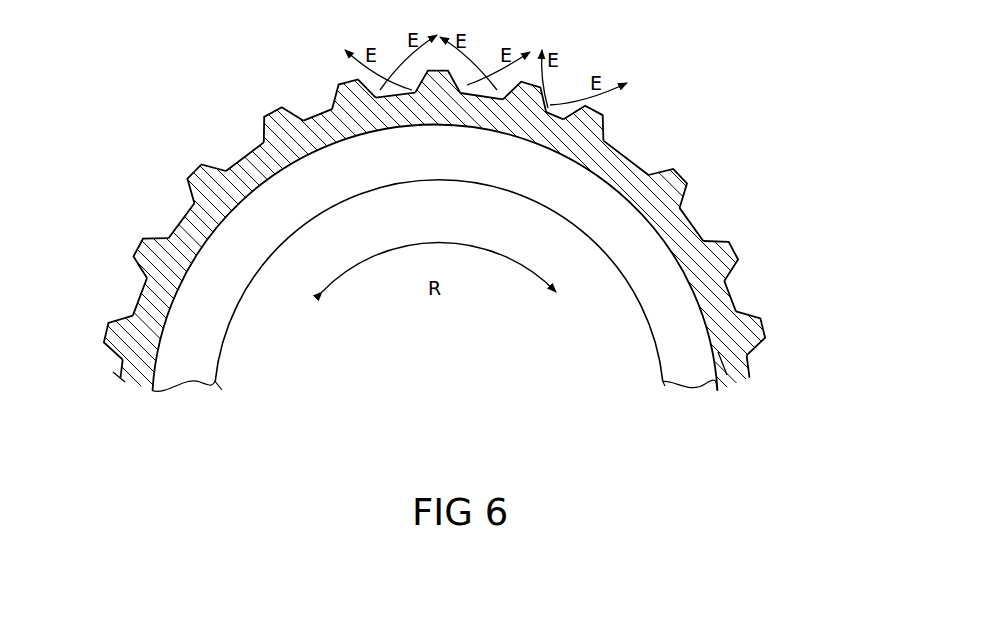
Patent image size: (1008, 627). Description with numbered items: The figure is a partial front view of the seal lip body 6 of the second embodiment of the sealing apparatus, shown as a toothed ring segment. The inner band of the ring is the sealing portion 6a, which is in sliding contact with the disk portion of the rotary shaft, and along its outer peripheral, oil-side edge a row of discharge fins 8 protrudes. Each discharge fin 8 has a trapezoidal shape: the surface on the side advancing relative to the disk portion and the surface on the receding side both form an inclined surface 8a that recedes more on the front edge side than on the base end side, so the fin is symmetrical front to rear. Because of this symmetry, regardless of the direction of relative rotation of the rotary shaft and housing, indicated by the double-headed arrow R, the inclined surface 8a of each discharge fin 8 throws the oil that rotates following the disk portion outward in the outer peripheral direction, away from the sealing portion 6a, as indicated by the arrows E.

The seal lip body 6 is at (672, 353).
The sealing portion 6a is at (730, 370).
The discharge fin 8 is at (258, 126).
The inclined surface 8a is at (225, 168).